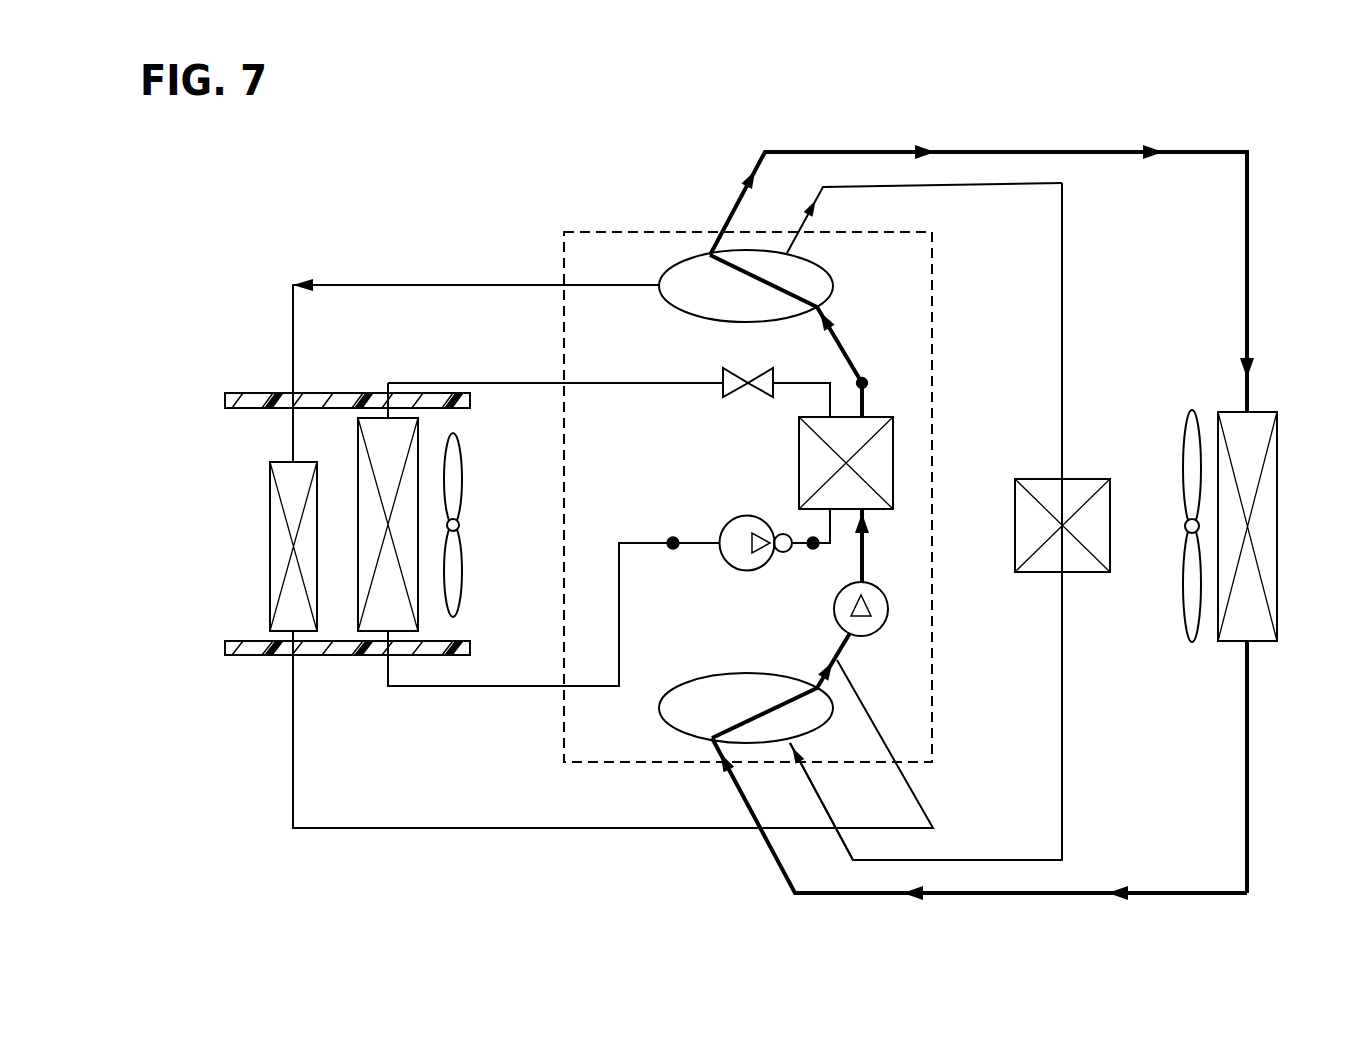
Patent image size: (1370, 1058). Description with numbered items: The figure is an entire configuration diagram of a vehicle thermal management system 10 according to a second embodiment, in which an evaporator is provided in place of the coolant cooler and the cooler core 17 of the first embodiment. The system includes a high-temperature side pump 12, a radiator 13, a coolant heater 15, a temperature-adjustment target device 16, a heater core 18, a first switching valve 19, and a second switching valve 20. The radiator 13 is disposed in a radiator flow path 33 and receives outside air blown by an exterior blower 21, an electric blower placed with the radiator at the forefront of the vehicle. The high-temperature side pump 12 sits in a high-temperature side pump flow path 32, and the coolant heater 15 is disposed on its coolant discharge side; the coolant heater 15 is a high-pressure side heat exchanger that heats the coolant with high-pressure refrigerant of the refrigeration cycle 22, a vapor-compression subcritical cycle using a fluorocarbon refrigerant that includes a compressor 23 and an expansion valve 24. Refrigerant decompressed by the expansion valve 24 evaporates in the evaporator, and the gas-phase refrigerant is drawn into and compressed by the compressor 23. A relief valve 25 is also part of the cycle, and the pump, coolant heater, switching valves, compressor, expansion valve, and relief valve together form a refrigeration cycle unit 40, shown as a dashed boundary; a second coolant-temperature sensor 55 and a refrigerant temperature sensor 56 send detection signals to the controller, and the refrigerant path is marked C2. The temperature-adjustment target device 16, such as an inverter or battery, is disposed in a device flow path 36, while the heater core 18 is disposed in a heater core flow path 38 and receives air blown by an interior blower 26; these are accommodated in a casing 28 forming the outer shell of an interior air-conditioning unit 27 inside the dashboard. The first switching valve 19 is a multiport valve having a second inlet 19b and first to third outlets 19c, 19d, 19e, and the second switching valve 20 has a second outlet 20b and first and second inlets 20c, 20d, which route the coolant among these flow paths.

The vehicle thermal management system 10 is at (424, 232).
The high-temperature side pump 12 is at (889, 610).
The radiator 13 is at (1278, 512).
The coolant heater 15 is at (893, 452).
The temperature-adjustment target device 16 is at (1110, 505).
The cooler core 17 is at (358, 580).
The heater core 18 is at (270, 580).
The first switching valve 19 is at (834, 276).
The second inlet 19b is at (820, 307).
The first outlet 19c is at (710, 253).
The second outlet 19d is at (825, 252).
The third outlet 19e is at (660, 285).
The second switching valve 20 is at (660, 714).
The second outlet 20b is at (816, 686).
The first inlet 20c is at (716, 742).
The second inlet 20d is at (794, 746).
The exterior blower 21 is at (1183, 612).
The refrigeration cycle 22 is at (707, 546).
The compressor 23 is at (733, 518).
The expansion valve 24 is at (750, 395).
The relief valve 25 is at (783, 533).
The interior blower 26 is at (462, 592).
The interior air-conditioning unit 27 is at (243, 378).
The casing 28 is at (284, 392).
The high-temperature side pump flow path 32 is at (868, 543).
The radiator flow path 33 is at (1250, 272).
The device flow path 36 is at (1064, 346).
The heater core flow path 38 is at (476, 283).
The refrigeration cycle unit 40 is at (936, 327).
The second coolant-temperature sensor 55 is at (868, 382).
The refrigerant temperature sensor 56 is at (813, 550).
The second cycle passage C2 is at (868, 398).